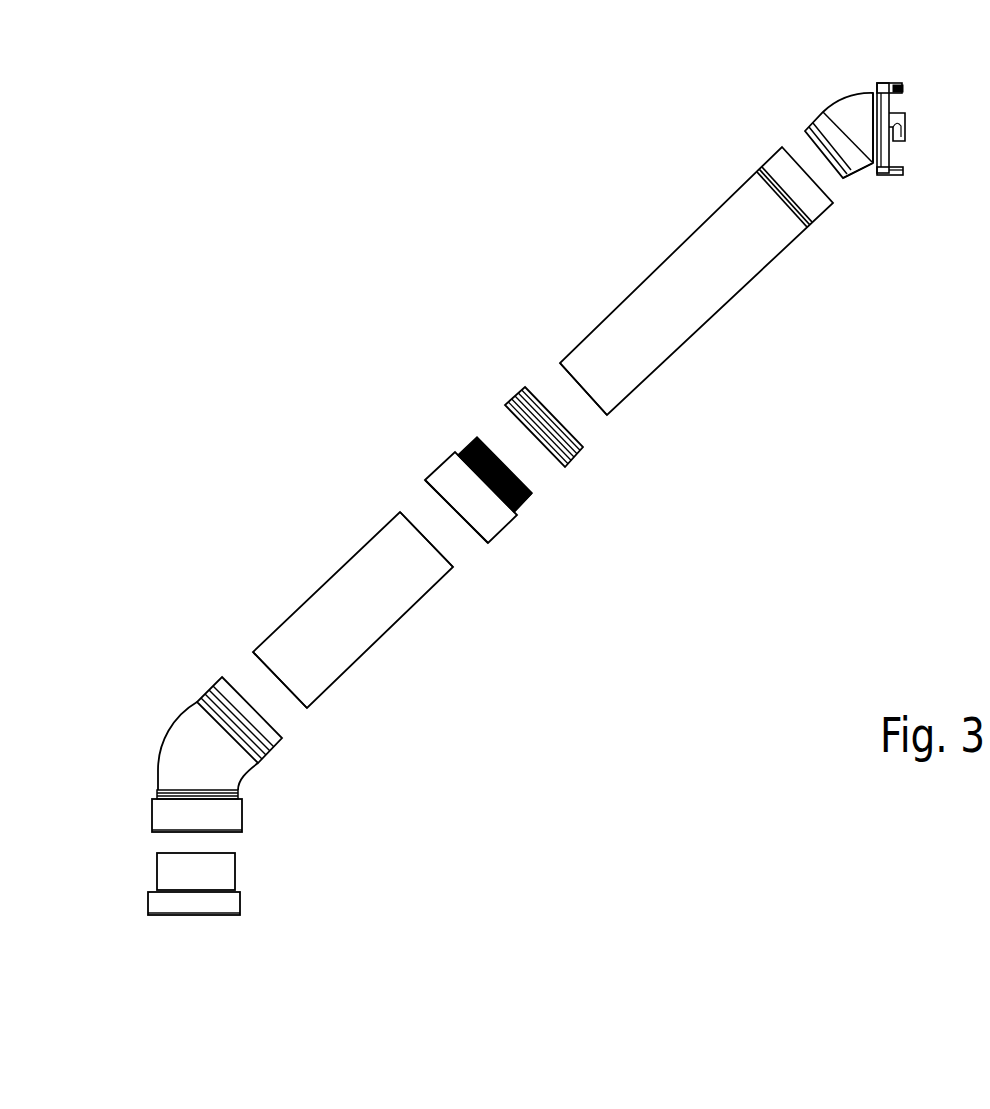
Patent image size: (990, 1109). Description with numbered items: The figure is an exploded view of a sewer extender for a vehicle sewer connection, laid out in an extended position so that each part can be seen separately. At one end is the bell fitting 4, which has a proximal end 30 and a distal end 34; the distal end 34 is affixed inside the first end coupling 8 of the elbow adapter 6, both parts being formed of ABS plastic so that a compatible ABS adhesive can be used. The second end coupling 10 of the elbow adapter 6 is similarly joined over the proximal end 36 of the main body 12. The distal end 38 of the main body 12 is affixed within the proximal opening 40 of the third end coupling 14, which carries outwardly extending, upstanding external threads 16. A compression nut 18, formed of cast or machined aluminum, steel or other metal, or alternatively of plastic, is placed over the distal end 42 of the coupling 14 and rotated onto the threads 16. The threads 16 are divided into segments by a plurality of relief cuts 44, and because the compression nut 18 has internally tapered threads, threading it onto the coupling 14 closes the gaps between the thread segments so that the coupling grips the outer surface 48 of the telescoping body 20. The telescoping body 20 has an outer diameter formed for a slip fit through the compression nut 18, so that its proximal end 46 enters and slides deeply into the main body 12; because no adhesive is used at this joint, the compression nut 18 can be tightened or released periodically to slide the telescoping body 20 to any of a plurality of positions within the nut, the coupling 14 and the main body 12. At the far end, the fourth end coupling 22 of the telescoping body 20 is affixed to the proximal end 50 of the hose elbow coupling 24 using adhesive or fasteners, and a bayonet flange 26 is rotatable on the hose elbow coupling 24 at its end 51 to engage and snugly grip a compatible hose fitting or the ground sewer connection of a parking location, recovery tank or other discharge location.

The bell fitting 4 is at (207, 889).
The elbow adapter 6 is at (182, 733).
The first end coupling 8 is at (162, 811).
The second end coupling 10 is at (214, 698).
The main body 12 is at (402, 632).
The third end coupling 14 is at (477, 473).
The external threads 16 is at (497, 448).
The compression nut 18 is at (504, 402).
The telescoping body 20 is at (690, 278).
The fourth end coupling 22 is at (742, 171).
The hose elbow coupling 24 is at (830, 134).
The bayonet flange 26 is at (923, 106).
The proximal end 30 is at (238, 922).
The distal end 34 is at (243, 858).
The proximal end 36 is at (307, 702).
The distal end 38 is at (475, 555).
The proximal opening 40 is at (483, 526).
The distal end 42 is at (565, 506).
The relief cuts 44 is at (520, 485).
The proximal end 46 is at (643, 401).
The outer surface 48 is at (696, 281).
The proximal end 50 is at (870, 204).
The end 51 is at (835, 93).